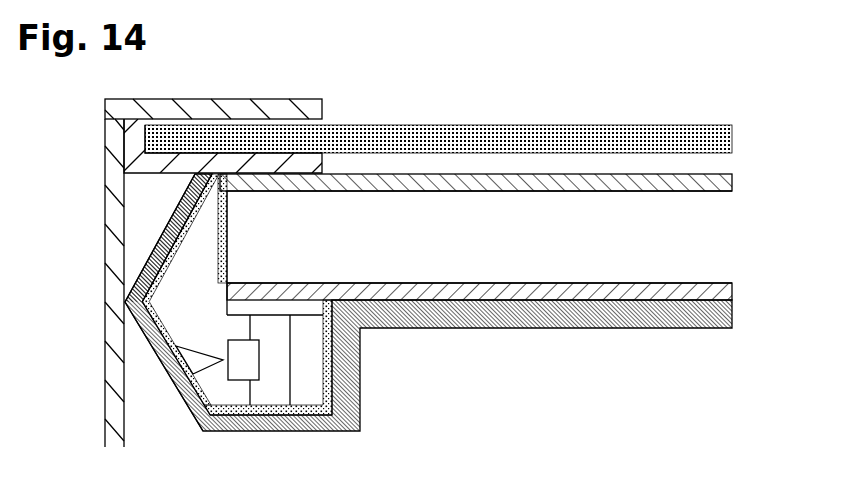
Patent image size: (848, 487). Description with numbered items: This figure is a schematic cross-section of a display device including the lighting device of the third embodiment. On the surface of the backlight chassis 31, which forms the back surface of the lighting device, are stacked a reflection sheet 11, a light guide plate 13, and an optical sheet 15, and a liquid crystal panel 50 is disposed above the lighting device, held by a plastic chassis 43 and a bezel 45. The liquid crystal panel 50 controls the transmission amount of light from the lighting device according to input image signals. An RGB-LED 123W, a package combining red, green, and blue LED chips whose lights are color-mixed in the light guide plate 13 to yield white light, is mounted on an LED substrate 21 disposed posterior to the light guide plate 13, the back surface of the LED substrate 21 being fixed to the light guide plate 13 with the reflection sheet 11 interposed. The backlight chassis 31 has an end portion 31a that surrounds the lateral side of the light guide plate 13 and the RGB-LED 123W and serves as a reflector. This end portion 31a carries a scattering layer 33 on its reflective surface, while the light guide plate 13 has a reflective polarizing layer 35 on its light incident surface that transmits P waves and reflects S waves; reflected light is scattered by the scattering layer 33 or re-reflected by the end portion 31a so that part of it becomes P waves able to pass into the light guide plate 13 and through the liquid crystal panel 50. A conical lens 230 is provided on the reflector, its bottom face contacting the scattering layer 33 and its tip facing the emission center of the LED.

The reflection sheet 11 is at (720, 290).
The light guide plate 13 is at (720, 240).
The optical sheet 15 is at (730, 182).
The LED substrate 21 is at (332, 328).
The backlight chassis 31 is at (720, 315).
The end portion of backlight chassis 31a is at (180, 400).
The scattering layer 33 is at (165, 233).
The reflective polarizing layer 35 is at (192, 205).
The plastic chassis 43 is at (132, 152).
The bezel 45 is at (120, 118).
The liquid crystal panel 50 is at (720, 140).
The RGB-LED 123W is at (273, 363).
The conical lens 230 is at (202, 360).